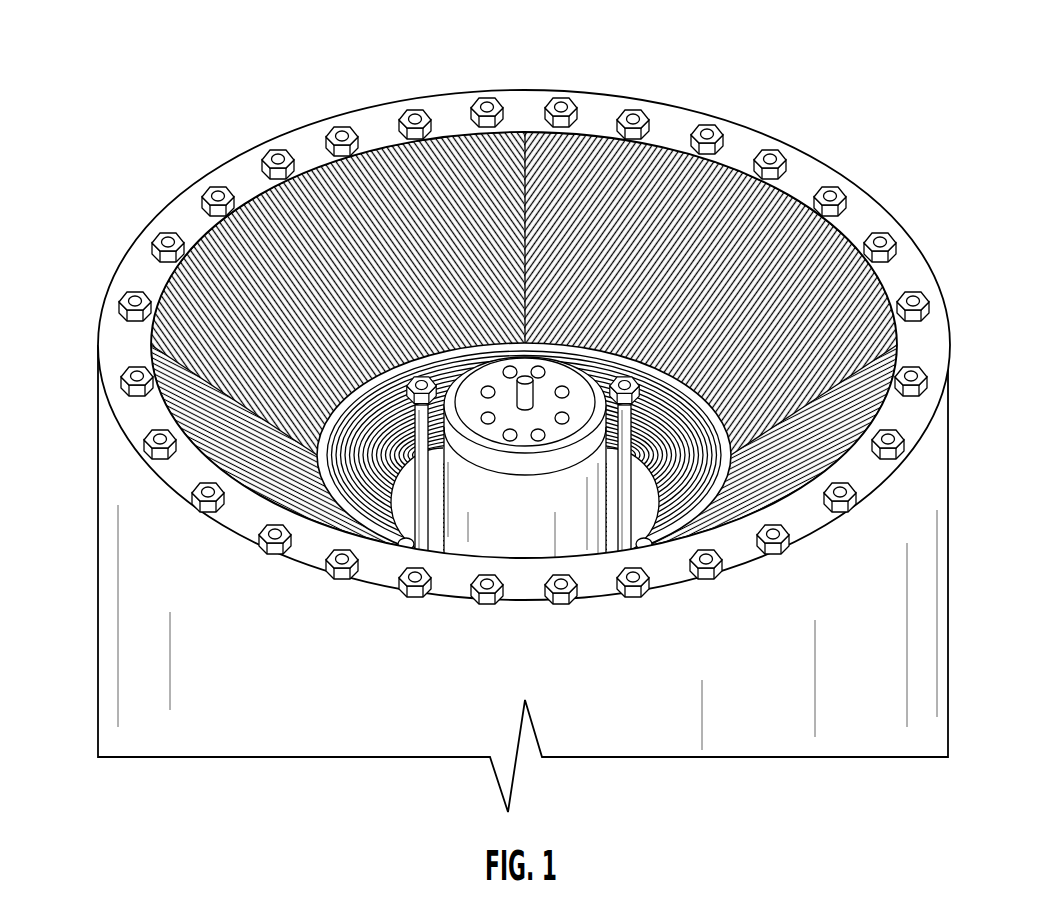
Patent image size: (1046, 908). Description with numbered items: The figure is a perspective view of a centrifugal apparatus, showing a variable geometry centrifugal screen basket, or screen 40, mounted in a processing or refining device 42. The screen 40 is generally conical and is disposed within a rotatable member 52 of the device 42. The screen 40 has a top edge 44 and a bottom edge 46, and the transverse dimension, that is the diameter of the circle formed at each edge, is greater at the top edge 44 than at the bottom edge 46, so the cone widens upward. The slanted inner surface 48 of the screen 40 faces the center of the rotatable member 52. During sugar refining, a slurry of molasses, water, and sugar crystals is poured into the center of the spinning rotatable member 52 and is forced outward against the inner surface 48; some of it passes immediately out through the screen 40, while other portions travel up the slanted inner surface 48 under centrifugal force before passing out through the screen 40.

The screen 40 is at (237, 263).
The processing or refining device 42 is at (862, 143).
The top edge 44 is at (658, 143).
The bottom edge 46 is at (337, 435).
The inner surface 48 is at (684, 310).
The rotatable member 52 is at (170, 473).